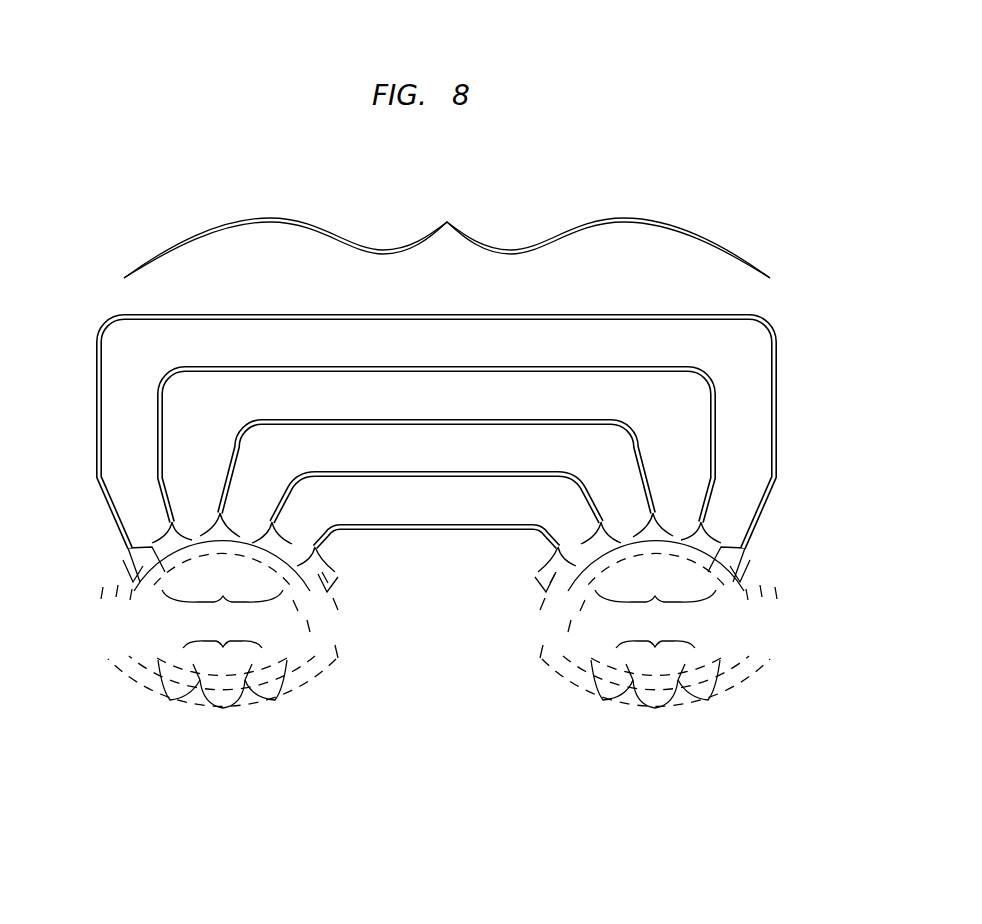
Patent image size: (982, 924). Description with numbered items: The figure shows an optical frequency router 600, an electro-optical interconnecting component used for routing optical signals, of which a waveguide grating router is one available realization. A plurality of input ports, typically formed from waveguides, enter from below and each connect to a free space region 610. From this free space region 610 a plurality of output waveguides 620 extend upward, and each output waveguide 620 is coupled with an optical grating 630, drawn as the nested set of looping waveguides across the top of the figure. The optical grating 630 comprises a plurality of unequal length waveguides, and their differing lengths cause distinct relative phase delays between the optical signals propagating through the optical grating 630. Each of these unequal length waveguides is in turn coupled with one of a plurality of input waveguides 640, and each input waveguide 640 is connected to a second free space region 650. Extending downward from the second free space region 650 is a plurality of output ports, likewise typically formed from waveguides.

The optical frequency router 600 is at (852, 177).
The free space region 610 is at (240, 633).
The output waveguides 620 is at (329, 532).
The optical grating 630 is at (447, 235).
The input waveguides 640 is at (759, 512).
The second free space region 650 is at (672, 633).